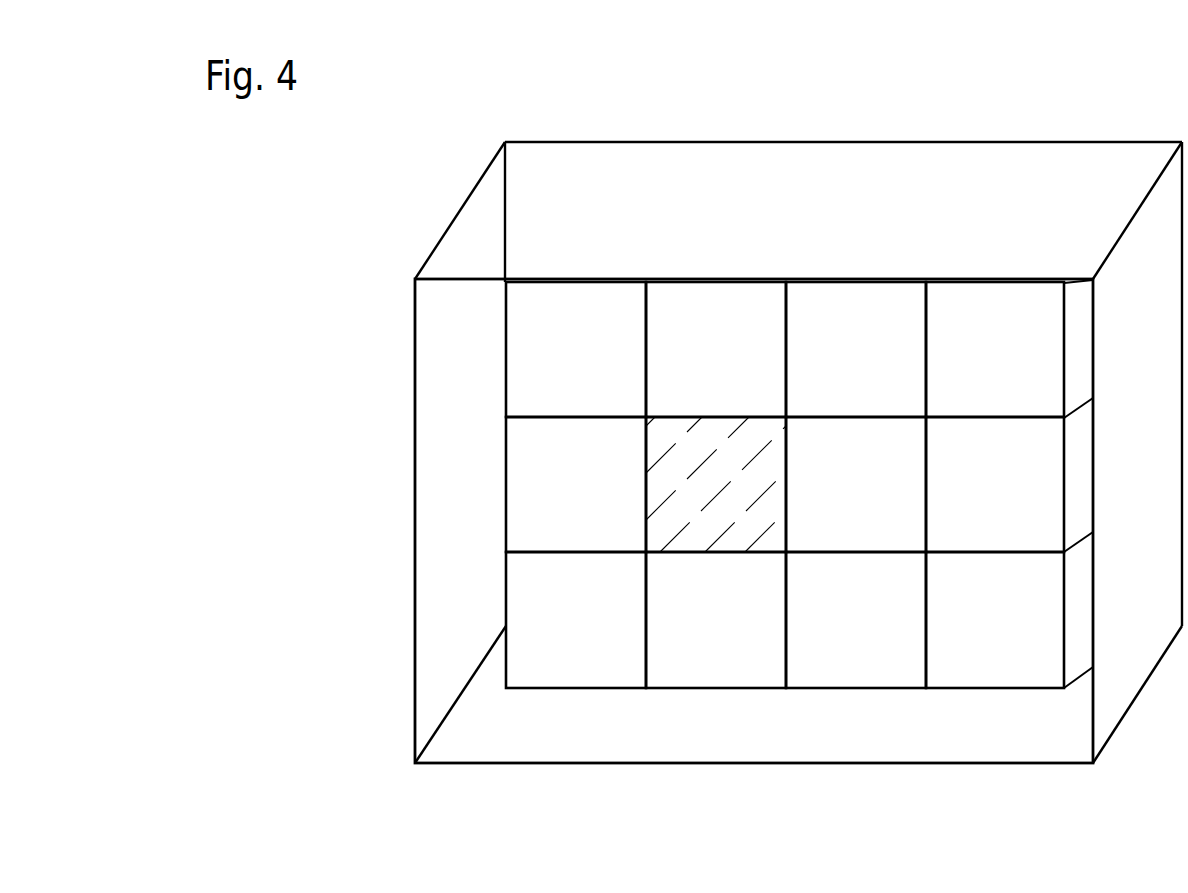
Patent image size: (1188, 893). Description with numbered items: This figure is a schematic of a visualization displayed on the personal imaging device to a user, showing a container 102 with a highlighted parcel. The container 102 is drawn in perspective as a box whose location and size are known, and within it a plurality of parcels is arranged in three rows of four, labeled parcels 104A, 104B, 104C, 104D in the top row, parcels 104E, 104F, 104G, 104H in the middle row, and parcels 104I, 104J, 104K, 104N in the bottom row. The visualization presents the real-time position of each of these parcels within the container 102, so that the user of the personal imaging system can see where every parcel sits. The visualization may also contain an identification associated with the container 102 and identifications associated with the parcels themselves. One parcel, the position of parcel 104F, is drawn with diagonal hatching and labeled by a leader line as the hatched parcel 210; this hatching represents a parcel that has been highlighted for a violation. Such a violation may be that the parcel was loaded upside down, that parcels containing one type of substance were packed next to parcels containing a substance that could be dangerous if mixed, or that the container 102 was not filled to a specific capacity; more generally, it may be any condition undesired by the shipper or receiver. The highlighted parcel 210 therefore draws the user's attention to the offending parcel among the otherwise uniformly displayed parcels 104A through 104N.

The container 102 is at (998, 138).
The parcel 104A is at (554, 355).
The parcel 104B is at (694, 355).
The parcel 104C is at (834, 355).
The parcel 104D is at (973, 355).
The parcel 104E is at (554, 494).
The parcel 104F is at (694, 494).
The parcel 104G is at (834, 494).
The parcel 104H is at (973, 494).
The parcel 104I is at (557, 630).
The parcel 104J is at (694, 630).
The parcel 104K is at (834, 630).
The parcel 104N is at (973, 630).
The hatched parcel 210 is at (693, 520).